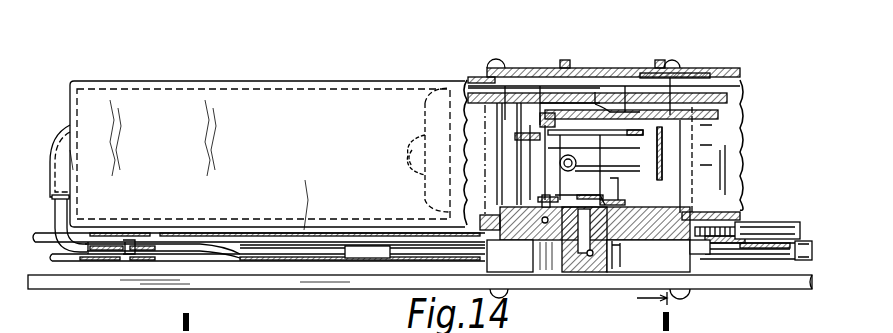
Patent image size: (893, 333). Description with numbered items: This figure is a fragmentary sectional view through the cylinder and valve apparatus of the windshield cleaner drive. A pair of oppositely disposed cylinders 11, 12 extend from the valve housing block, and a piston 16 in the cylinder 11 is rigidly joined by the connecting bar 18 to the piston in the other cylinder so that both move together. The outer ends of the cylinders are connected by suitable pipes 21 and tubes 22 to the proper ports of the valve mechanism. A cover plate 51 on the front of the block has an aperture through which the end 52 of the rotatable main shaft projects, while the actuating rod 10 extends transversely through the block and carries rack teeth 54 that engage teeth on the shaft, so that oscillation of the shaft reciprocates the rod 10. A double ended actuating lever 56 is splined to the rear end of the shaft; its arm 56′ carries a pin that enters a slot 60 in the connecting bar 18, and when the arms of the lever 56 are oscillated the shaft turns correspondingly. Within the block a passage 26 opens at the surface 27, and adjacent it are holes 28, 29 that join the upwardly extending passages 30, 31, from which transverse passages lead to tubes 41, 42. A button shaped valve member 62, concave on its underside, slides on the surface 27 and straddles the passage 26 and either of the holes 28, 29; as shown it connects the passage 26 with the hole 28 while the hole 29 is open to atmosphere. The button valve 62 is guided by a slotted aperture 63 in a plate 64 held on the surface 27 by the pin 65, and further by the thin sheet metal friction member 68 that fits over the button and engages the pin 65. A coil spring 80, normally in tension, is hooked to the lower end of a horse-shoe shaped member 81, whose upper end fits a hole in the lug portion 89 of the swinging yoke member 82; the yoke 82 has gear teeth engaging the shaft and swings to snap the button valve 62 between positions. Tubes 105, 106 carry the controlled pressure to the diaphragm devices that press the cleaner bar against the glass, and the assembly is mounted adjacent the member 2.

The cylinder 11 is at (263, 100).
The piston 16 is at (430, 119).
The cylinder 12 is at (723, 144).
The surface of the valve housing block 27 is at (670, 207).
The sheet metal friction member 68 is at (545, 207).
The passage 26 is at (598, 264).
The upwardly extending passage 31 is at (648, 253).
The hole 29 is at (620, 243).
The upwardly extending passage 30 is at (543, 224).
The hole 28 is at (578, 222).
The cover plate 51 is at (523, 76).
The double ended actuating lever 56 is at (570, 94).
The end of the rotatable main shaft member 52 is at (605, 92).
The slot 60 is at (630, 95).
The arm of the actuating lever 56′ is at (632, 100).
The connecting bar 18 is at (703, 113).
The swinging yoke member 82 is at (514, 136).
The lug portion 89 is at (528, 141).
The coil spring 80 is at (562, 166).
The pin 65 is at (592, 155).
The horse-shoe shaped member 81 is at (615, 169).
The slotted aperture 63 is at (622, 187).
The plate 64 is at (616, 203).
The button shaped valve member 62 is at (557, 190).
The teeth on the rod 54 is at (735, 224).
The actuating rod 10 is at (780, 231).
The tube 22 is at (767, 253).
The tube 106 is at (800, 248).
The tube 42 is at (696, 242).
The rail 2 is at (284, 282).
The tube 105 is at (74, 260).
The pipe 21 is at (111, 258).
The tube 41 is at (440, 248).